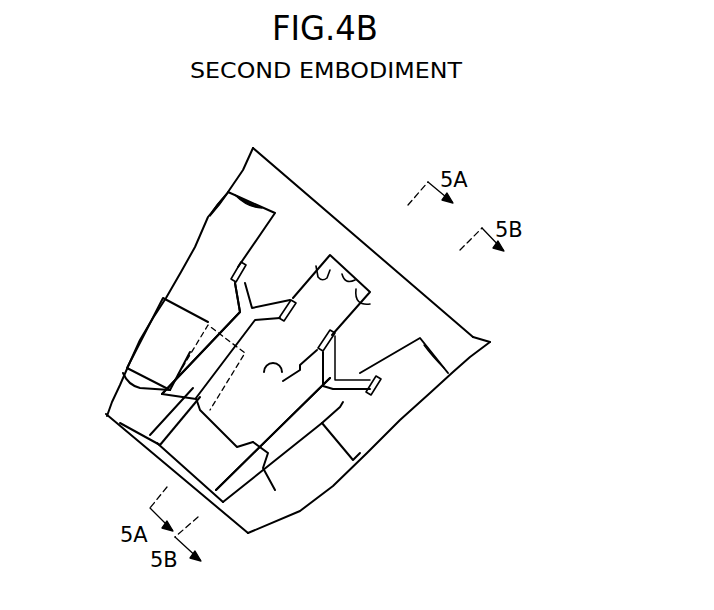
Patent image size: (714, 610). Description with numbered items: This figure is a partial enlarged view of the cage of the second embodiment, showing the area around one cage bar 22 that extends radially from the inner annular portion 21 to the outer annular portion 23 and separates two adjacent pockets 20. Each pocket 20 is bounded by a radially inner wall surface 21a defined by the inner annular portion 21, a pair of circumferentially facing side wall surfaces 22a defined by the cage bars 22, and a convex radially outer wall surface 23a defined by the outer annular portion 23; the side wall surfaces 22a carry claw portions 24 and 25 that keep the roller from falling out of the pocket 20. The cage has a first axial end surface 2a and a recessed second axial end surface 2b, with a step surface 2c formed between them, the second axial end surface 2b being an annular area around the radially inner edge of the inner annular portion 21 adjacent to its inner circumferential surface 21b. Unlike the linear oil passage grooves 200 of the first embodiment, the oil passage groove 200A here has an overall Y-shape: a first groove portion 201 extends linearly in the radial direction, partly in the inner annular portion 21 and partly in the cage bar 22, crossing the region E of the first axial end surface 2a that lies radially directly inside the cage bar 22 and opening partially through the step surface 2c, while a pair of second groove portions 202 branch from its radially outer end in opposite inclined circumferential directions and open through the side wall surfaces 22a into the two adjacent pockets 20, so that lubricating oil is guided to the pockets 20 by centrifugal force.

The first axial end surface 2a is at (233, 420).
The second axial end surface 2b is at (187, 447).
The step surface 2c is at (137, 388).
The pocket 20 is at (335, 267).
The inner annular portion 21 is at (163, 357).
The inner wall surface 21a is at (283, 380).
The inner circumferential surface 21b is at (120, 430).
The cage bar 22 is at (280, 273).
The side wall surface 22a is at (330, 262).
The outer annular portion 23 is at (460, 343).
The outer wall surface 23a is at (355, 275).
The claw portion 24 is at (236, 270).
The claw portion 25 is at (232, 314).
The oil passage groove 200 is at (225, 312).
The oil passage groove 200A is at (523, 392).
The first groove portion 201 is at (305, 403).
The second groove portion 202 is at (327, 358).
The region E is at (160, 323).